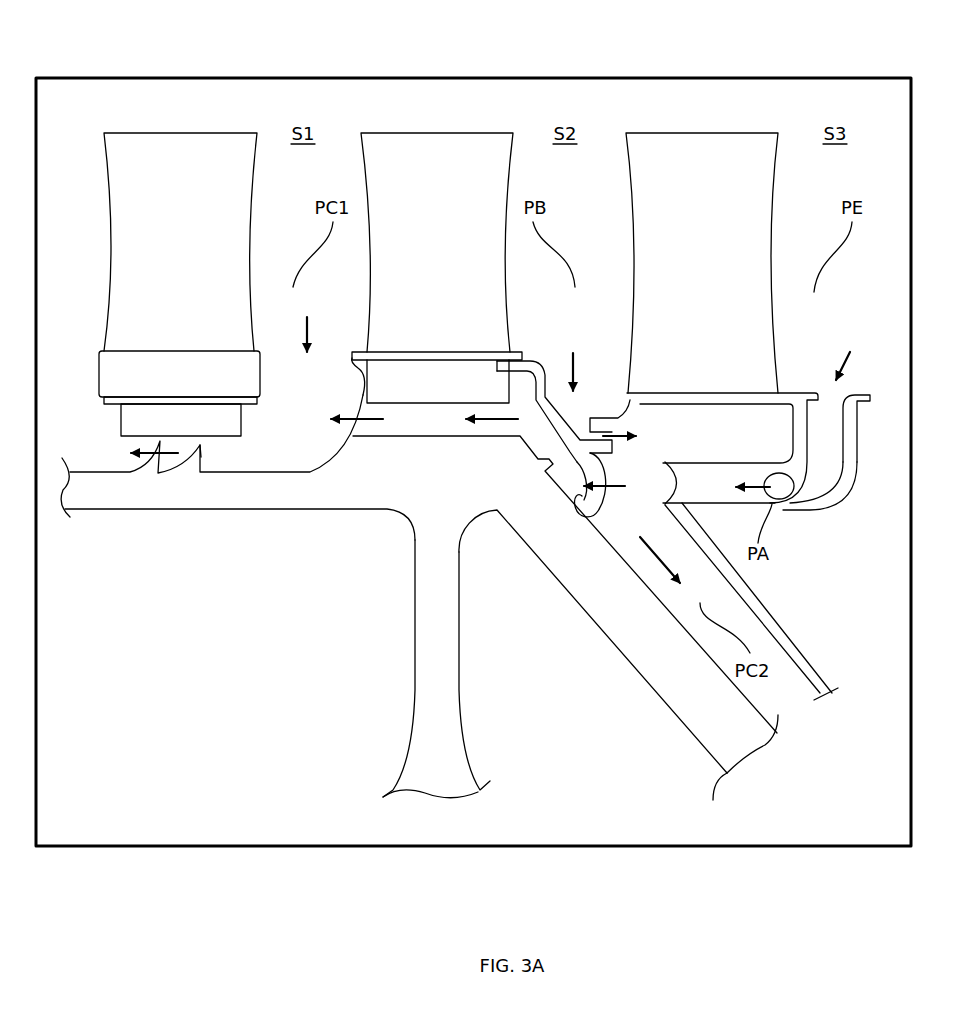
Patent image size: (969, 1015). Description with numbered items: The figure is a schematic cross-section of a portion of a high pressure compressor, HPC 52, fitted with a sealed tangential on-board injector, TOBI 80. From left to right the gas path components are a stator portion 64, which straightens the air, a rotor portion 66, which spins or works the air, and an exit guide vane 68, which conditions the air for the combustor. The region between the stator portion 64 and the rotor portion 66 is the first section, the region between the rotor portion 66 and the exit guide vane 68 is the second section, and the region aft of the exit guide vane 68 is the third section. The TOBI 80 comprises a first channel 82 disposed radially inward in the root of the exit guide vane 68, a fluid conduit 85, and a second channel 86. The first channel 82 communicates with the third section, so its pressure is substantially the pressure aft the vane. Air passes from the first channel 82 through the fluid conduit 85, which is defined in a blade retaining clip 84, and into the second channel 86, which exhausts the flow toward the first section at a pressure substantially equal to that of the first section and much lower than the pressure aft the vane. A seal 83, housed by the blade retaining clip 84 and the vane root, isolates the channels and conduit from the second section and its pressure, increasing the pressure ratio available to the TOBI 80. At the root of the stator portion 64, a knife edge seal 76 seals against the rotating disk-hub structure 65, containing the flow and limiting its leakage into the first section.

The high pressure compressor 52 is at (812, 110).
The stator portion 64 is at (178, 143).
The disk-hub structure 65 is at (415, 608).
The rotor portion 66 is at (436, 143).
The exit guide vane 68 is at (692, 143).
The knife edge seal 76 is at (202, 457).
The TOBI 80 is at (788, 510).
The first channel 82 is at (807, 482).
The seal 83 is at (596, 418).
The blade retaining clip 84 is at (540, 366).
The fluid conduit 85 is at (593, 500).
The second channel 86 is at (382, 378).